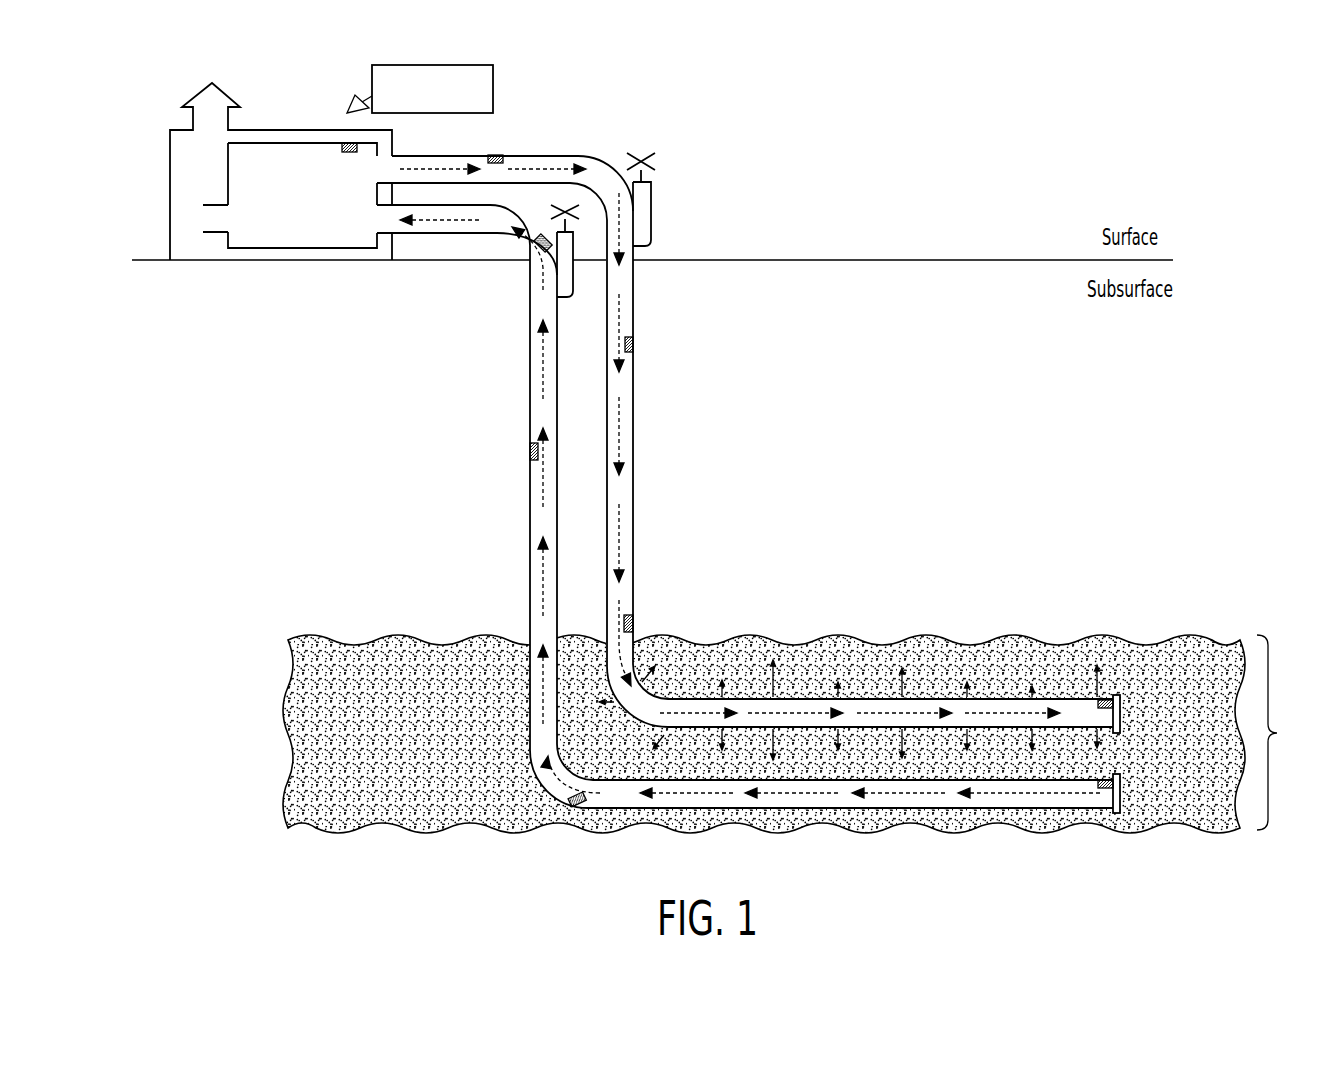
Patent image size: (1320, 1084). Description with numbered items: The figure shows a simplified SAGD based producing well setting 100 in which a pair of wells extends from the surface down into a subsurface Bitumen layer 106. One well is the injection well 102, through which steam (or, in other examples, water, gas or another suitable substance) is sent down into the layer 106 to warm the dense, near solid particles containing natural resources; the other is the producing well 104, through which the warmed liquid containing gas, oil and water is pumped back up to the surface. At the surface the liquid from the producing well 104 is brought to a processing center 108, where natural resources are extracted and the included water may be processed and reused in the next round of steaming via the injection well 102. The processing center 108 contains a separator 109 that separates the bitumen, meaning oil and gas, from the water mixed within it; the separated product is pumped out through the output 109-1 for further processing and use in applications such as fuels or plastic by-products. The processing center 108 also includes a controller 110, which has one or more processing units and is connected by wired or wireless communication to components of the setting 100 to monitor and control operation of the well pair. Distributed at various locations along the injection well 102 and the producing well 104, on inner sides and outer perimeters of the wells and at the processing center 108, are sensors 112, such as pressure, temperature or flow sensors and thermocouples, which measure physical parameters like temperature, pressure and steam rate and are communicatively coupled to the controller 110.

The producing well setting 100 is at (1240, 130).
The injection well 102 is at (634, 392).
The producing well 104 is at (530, 396).
The Bitumen layer 106 is at (798, 734).
The processing center 108 is at (255, 129).
The separator 109 is at (227, 172).
The output 109-1 is at (190, 220).
The controller 110 is at (493, 90).
The sensors 112 is at (345, 144).